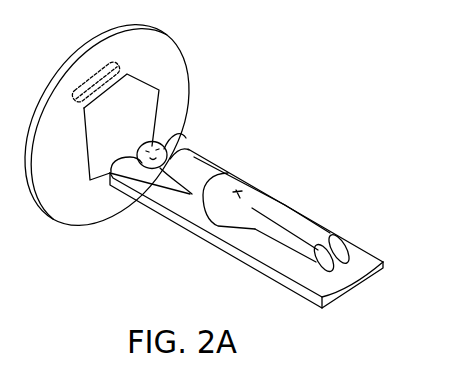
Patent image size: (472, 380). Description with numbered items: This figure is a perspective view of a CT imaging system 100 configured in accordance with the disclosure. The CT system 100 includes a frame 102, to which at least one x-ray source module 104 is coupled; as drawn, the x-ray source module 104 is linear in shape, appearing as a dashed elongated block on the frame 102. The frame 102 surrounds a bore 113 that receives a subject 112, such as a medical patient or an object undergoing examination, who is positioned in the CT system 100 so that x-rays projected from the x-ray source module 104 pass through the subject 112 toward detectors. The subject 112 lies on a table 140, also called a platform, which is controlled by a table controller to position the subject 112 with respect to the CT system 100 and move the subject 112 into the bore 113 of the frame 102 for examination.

The CT imaging system 100 is at (312, 70).
The frame 102 is at (174, 67).
The x-ray source module 104 is at (97, 80).
The subject 112 is at (200, 153).
The bore 113 is at (105, 140).
The table 140 is at (368, 247).